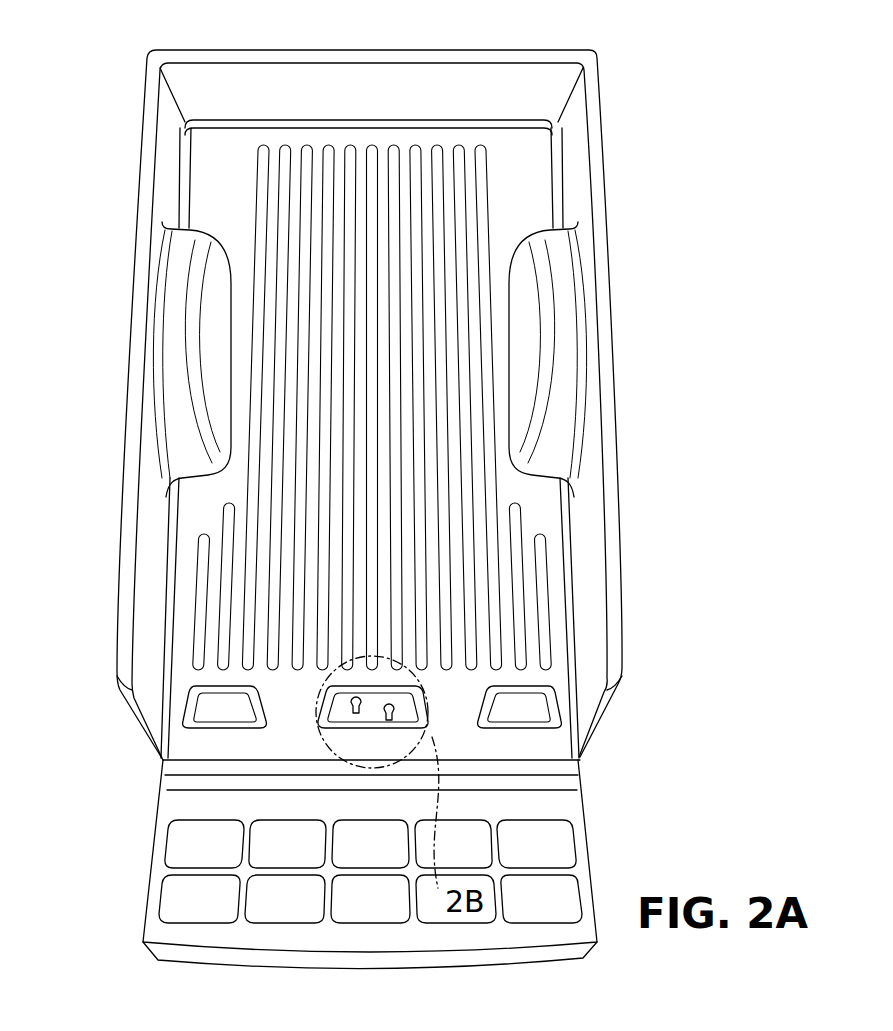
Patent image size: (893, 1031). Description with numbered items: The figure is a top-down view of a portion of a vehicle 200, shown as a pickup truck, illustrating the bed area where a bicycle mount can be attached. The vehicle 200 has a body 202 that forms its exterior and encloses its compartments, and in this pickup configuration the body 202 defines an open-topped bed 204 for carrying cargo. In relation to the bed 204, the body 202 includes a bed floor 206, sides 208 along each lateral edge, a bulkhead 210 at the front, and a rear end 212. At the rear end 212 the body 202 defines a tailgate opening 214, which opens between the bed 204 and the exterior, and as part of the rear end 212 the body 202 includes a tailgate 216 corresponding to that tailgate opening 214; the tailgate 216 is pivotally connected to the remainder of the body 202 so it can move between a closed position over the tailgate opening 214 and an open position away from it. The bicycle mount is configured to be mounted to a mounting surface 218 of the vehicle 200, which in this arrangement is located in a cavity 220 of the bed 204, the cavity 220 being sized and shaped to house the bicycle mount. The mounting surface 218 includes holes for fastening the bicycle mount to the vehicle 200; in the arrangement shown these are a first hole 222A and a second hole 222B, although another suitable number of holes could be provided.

The vehicle 200 is at (628, 119).
The body 202 is at (608, 204).
The bed 204 is at (605, 238).
The bed floor 206 is at (540, 500).
The sides 208 is at (148, 572).
The bulkhead 210 is at (512, 80).
The rear end 212 is at (600, 728).
The tailgate opening 214 is at (600, 770).
The tailgate 216 is at (580, 823).
The mounting surface 218 is at (368, 717).
The cavity 220 is at (182, 722).
The first hole 222A is at (354, 698).
The second hole 222B is at (390, 705).